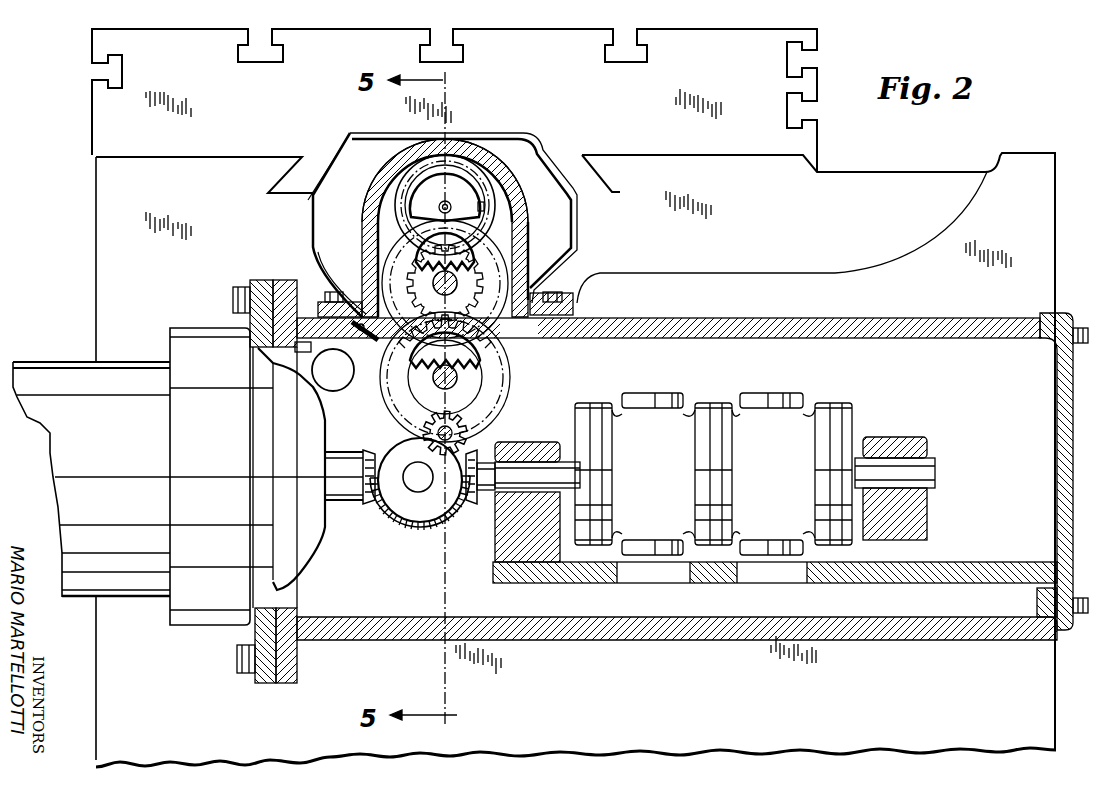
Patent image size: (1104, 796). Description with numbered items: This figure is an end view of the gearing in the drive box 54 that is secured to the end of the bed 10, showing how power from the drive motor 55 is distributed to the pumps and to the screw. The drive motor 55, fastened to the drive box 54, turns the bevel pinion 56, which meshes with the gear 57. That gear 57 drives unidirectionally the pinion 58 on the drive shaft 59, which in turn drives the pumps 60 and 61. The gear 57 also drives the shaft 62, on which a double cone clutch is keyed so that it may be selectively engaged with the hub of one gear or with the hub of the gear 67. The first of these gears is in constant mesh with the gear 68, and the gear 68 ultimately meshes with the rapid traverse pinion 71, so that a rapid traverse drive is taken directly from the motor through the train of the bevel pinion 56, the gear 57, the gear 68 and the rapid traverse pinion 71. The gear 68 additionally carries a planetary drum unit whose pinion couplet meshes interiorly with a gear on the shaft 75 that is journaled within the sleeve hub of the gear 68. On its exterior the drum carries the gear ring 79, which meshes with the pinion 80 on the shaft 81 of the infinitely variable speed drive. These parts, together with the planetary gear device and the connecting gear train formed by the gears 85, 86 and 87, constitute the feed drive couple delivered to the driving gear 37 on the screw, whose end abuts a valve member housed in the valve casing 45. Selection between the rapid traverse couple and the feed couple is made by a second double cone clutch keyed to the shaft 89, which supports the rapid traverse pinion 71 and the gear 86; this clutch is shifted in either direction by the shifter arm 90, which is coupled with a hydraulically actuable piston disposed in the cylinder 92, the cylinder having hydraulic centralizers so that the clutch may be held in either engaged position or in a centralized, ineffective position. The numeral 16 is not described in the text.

The bed 10 is at (105, 218).
The work table 16 is at (712, 42).
The driving gear 37 is at (480, 250).
The valve casing 45 is at (418, 198).
The drive box 54 is at (922, 633).
The drive motor 55 is at (158, 580).
The bevel pinion 56 is at (373, 512).
The gear 57 is at (420, 485).
The pinion 58 is at (462, 515).
The drive shaft 59 is at (568, 465).
The pump 60 is at (655, 393).
The pump 61 is at (768, 393).
The shaft 62 is at (420, 520).
The gear 67 is at (448, 505).
The gear 68 is at (346, 290).
The rapid traverse pinion 71 is at (380, 273).
The shaft 75 is at (483, 372).
The gear ring 79 is at (462, 395).
The pinion 80 is at (462, 420).
The shaft 81 is at (403, 415).
The gear 85 is at (510, 352).
The gear 86 is at (578, 264).
The gear 87 is at (392, 305).
The shaft 89 is at (458, 292).
The shifter arm 90 is at (346, 376).
The cylinder 92 is at (322, 388).